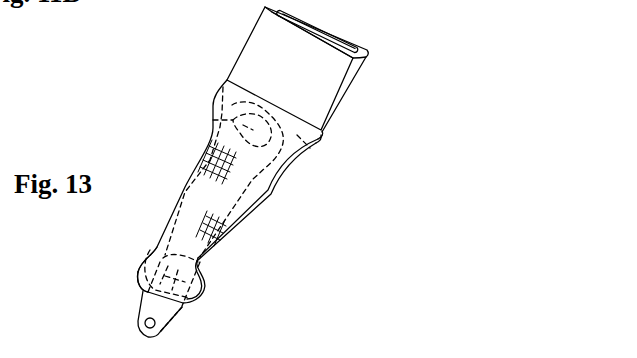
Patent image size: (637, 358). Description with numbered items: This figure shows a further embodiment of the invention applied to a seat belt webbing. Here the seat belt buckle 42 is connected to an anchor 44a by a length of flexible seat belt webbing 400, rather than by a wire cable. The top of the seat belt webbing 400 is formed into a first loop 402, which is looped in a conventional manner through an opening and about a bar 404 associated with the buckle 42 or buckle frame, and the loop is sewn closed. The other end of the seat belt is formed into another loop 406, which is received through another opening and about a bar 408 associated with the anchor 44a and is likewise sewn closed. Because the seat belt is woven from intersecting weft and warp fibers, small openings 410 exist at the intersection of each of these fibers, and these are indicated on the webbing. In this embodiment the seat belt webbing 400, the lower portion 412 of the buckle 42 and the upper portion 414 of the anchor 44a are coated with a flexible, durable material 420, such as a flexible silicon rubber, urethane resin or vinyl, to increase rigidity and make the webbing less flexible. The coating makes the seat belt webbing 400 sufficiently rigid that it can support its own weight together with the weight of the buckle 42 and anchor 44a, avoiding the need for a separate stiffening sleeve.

The seat belt buckle 42 is at (255, 57).
The seat belt webbing 400 is at (242, 180).
The first loop 402 is at (317, 125).
The bar 404 is at (213, 120).
The another loop 406 is at (152, 250).
The bar 408 is at (140, 268).
The small openings 410 is at (205, 147).
The lower portion of the buckle 412 is at (320, 140).
The upper portion of the anchor 414 is at (207, 288).
The flexible, durable material 420 is at (248, 228).
The anchor 44a is at (167, 305).